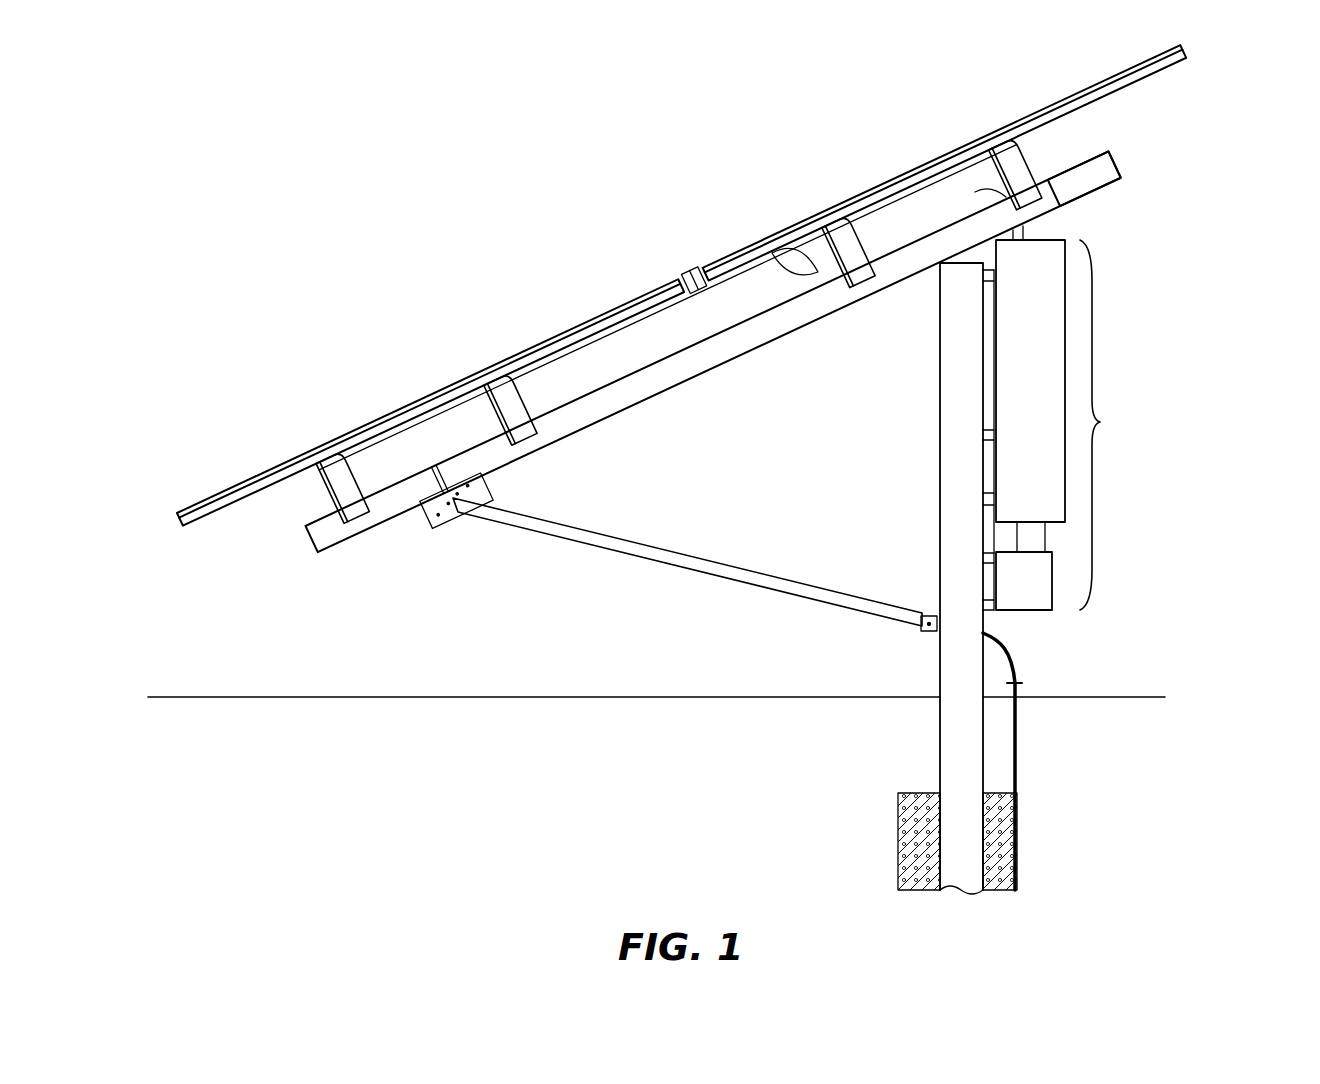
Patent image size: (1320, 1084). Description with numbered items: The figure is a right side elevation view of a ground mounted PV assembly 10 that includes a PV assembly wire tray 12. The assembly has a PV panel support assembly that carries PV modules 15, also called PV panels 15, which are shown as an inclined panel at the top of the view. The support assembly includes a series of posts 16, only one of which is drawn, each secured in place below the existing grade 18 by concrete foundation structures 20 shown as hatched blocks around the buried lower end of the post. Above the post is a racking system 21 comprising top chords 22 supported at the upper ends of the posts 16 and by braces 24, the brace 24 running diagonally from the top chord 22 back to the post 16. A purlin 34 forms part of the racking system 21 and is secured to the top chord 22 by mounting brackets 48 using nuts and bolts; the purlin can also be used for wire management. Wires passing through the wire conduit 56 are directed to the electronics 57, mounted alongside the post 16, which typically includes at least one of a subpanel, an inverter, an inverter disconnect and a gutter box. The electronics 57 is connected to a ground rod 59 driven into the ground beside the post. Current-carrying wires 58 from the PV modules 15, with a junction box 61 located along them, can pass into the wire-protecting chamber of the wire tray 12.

The ground mounted PV assembly 10 is at (212, 88).
The PV assembly wire tray 12 is at (832, 262).
The PV modules 15 is at (980, 138).
The posts 16 is at (958, 745).
The existing grade 18 is at (318, 697).
The concrete foundation structures 20 is at (905, 856).
The racking system 21 is at (1182, 647).
The top chords 22 is at (723, 357).
The braces 24 is at (737, 582).
The purlin 34 is at (1022, 183).
The mounting brackets 48 is at (1023, 181).
The wire conduit 56 is at (952, 207).
The electronics 57 is at (1063, 418).
The current-carrying wires 58 is at (747, 258).
The ground rod 59 is at (1018, 731).
The junction box 61 is at (700, 272).